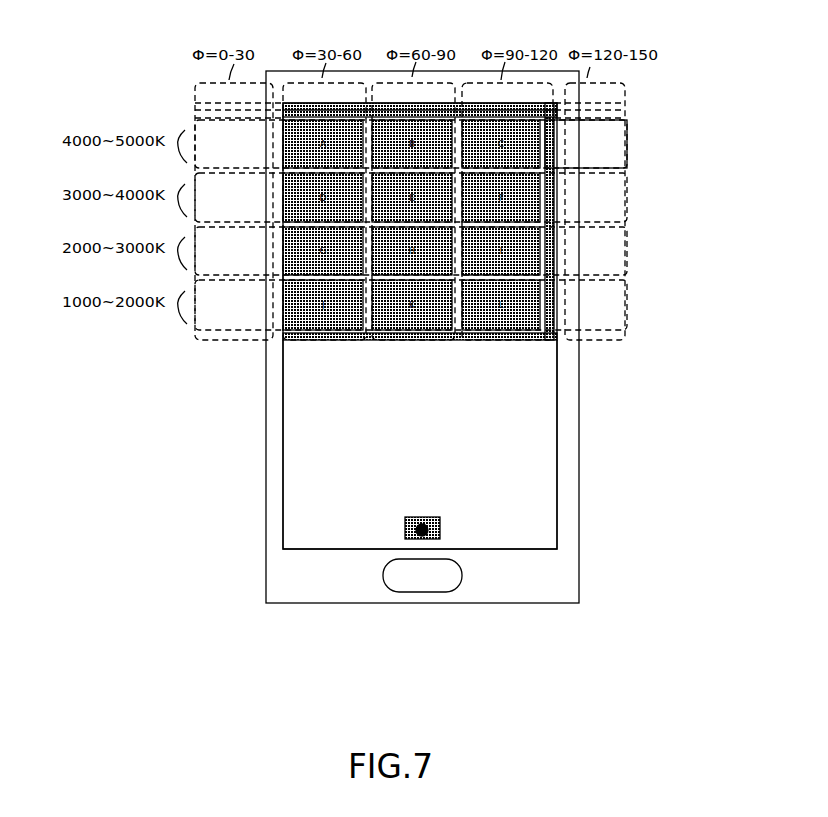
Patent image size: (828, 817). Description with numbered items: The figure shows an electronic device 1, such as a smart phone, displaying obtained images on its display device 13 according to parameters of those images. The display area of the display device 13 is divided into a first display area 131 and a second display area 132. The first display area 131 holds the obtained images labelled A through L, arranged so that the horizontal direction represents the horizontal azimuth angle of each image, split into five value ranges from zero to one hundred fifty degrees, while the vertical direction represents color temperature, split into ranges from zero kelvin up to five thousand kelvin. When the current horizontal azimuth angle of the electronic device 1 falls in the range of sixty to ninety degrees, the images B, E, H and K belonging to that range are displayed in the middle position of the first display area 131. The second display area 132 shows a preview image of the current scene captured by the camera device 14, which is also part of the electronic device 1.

The electronic device 1 is at (462, 72).
The display device 13 is at (557, 500).
The first display area 131 is at (543, 170).
The second display area 132 is at (523, 448).
The camera device 14 is at (405, 528).